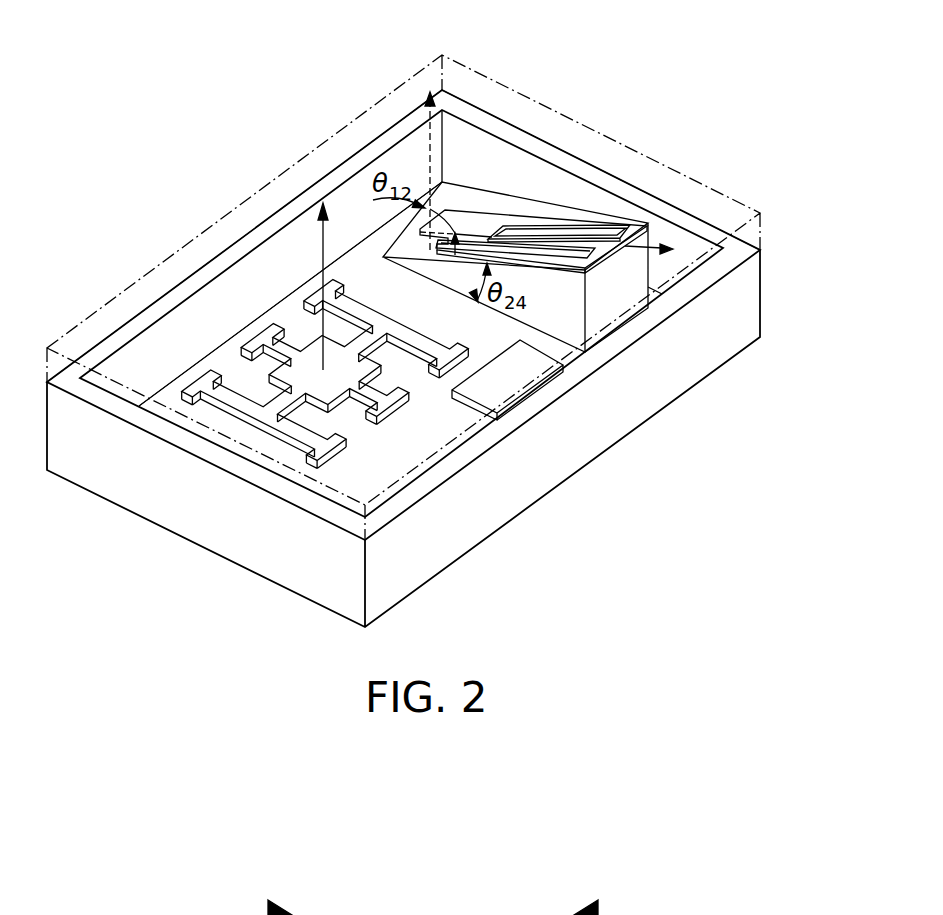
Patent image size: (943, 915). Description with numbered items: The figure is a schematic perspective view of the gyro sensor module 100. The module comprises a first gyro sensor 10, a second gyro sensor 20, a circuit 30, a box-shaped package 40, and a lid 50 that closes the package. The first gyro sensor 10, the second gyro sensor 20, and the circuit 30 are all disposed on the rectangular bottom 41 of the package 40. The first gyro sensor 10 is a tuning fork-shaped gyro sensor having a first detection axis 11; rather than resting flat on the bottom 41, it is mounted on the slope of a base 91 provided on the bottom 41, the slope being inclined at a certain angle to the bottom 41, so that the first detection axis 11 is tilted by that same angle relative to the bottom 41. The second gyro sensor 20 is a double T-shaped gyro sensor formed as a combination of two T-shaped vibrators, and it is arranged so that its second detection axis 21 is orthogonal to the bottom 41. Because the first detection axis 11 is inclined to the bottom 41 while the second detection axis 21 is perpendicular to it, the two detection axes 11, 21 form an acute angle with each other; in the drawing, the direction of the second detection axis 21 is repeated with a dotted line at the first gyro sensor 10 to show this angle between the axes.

The gyro sensor module 100 is at (654, 94).
The box-shaped package 40 is at (762, 290).
The rectangular bottom 41 is at (363, 277).
The lid 50 is at (736, 198).
The second gyro sensor 20 is at (268, 330).
The second detection axis 21 is at (322, 250).
The first gyro sensor 10 is at (481, 218).
The first detection axis 11 is at (529, 226).
The base 91 is at (452, 270).
The circuit 30 is at (508, 384).